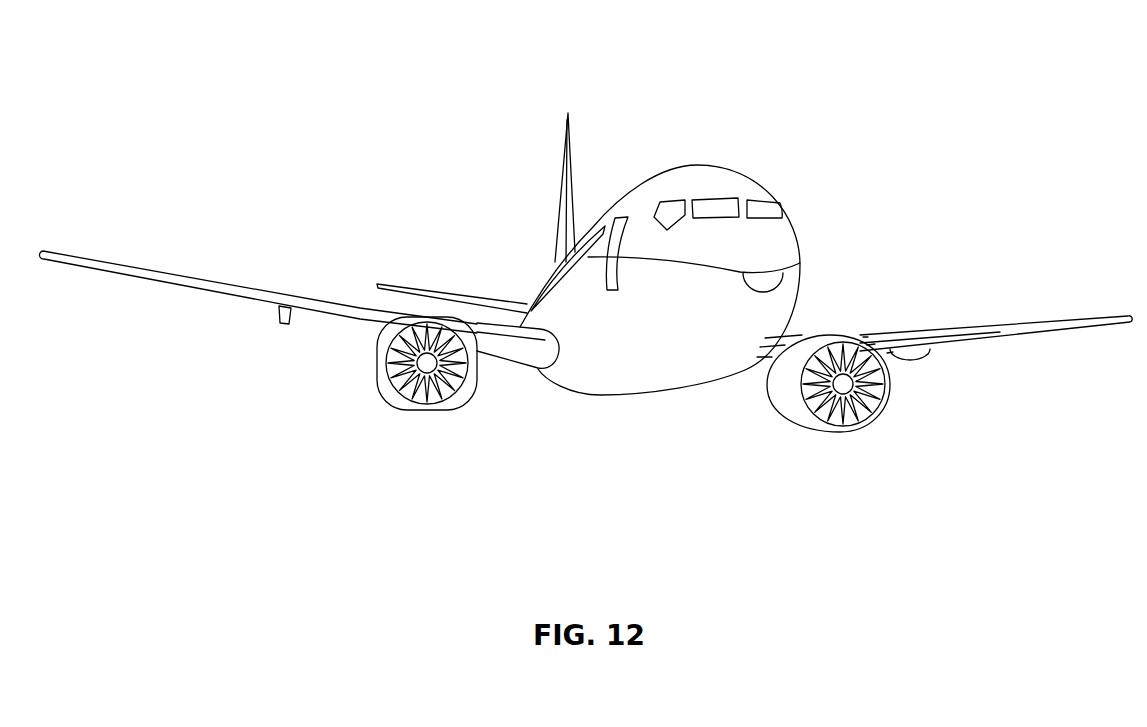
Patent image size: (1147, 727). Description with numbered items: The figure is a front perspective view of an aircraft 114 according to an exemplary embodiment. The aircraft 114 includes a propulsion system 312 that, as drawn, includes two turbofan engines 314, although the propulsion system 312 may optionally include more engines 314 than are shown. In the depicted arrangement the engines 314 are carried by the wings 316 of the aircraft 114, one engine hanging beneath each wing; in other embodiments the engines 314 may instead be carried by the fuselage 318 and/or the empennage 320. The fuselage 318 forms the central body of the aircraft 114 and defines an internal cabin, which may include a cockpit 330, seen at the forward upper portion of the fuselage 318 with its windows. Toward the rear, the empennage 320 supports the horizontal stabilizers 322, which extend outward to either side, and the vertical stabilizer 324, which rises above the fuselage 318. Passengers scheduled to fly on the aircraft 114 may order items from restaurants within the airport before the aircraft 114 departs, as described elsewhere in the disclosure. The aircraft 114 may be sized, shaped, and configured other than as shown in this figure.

The aircraft 114 is at (317, 60).
The propulsion system 312 is at (932, 424).
The turbofan engines 314 is at (420, 410).
The wings 316 is at (187, 278).
The fuselage 318 is at (803, 233).
The empennage 320 is at (557, 263).
The horizontal stabilizers 322 is at (418, 290).
The vertical stabilizer 324 is at (562, 153).
The cockpit 330 is at (757, 208).